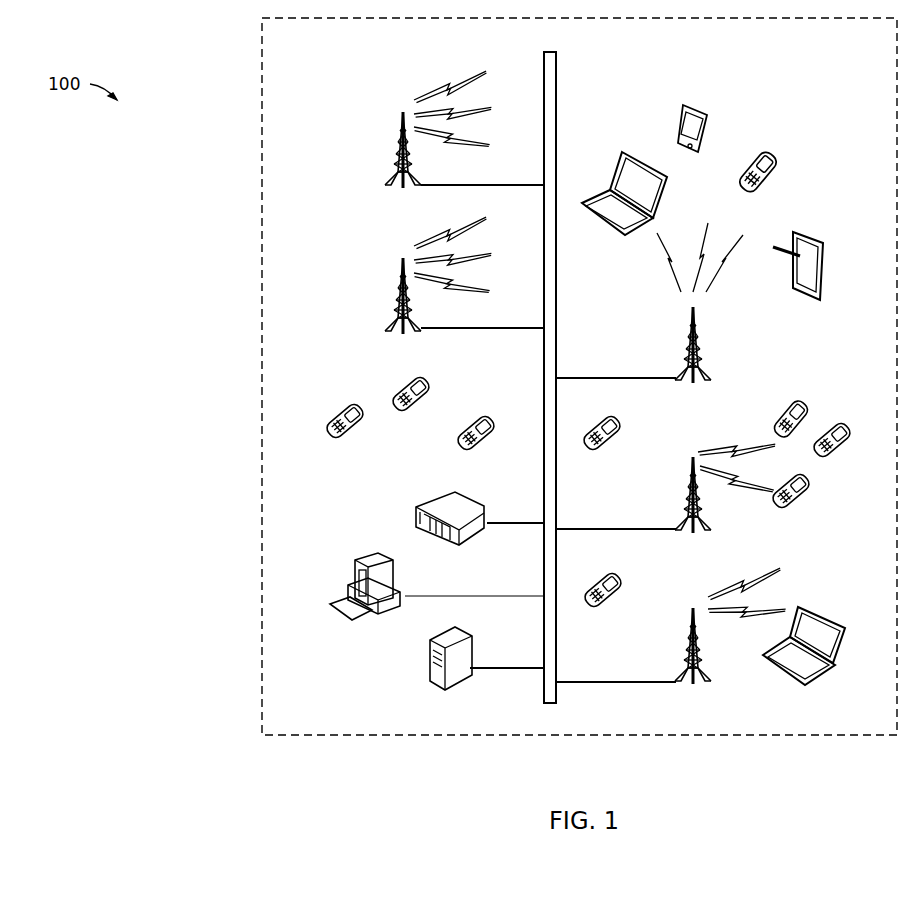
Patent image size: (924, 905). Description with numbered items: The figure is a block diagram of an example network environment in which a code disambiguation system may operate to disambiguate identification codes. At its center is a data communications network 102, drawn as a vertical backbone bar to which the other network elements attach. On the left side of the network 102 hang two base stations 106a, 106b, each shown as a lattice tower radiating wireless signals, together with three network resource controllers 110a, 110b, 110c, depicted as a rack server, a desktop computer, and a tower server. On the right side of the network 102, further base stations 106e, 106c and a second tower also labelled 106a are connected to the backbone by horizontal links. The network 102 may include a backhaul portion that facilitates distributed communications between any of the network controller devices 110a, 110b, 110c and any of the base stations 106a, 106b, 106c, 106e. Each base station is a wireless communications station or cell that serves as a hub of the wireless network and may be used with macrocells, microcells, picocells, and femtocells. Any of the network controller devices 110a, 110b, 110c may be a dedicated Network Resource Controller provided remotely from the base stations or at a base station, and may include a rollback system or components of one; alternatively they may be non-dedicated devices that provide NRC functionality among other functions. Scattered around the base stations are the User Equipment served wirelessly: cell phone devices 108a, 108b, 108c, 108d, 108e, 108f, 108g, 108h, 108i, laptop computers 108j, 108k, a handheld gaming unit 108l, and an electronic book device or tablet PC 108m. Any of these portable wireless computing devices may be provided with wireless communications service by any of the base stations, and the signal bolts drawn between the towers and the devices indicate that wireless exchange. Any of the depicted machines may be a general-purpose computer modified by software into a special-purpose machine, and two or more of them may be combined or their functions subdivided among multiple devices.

The data communications network 102 is at (542, 64).
The base station 106a is at (397, 148).
The base station 106b is at (397, 293).
The base station 106c is at (684, 644).
The base station 106e is at (702, 354).
The cell phone device 108a is at (334, 418).
The cell phone device 108b is at (404, 383).
The cell phone device 108c is at (462, 450).
The cell phone device 108d is at (622, 578).
The cell phone device 108e is at (804, 508).
The cell phone device 108f is at (845, 453).
The cell phone device 108g is at (807, 400).
The cell phone device 108h is at (617, 426).
The cell phone device 108i is at (784, 158).
The laptop computer 108j is at (820, 610).
The laptop computer 108k is at (622, 146).
The handheld gaming unit 108l is at (710, 120).
The electronic book device or tablet PC 108m is at (822, 238).
The network resource controller 110a is at (412, 518).
The network resource controller 110b is at (355, 558).
The network resource controller 110c is at (428, 672).